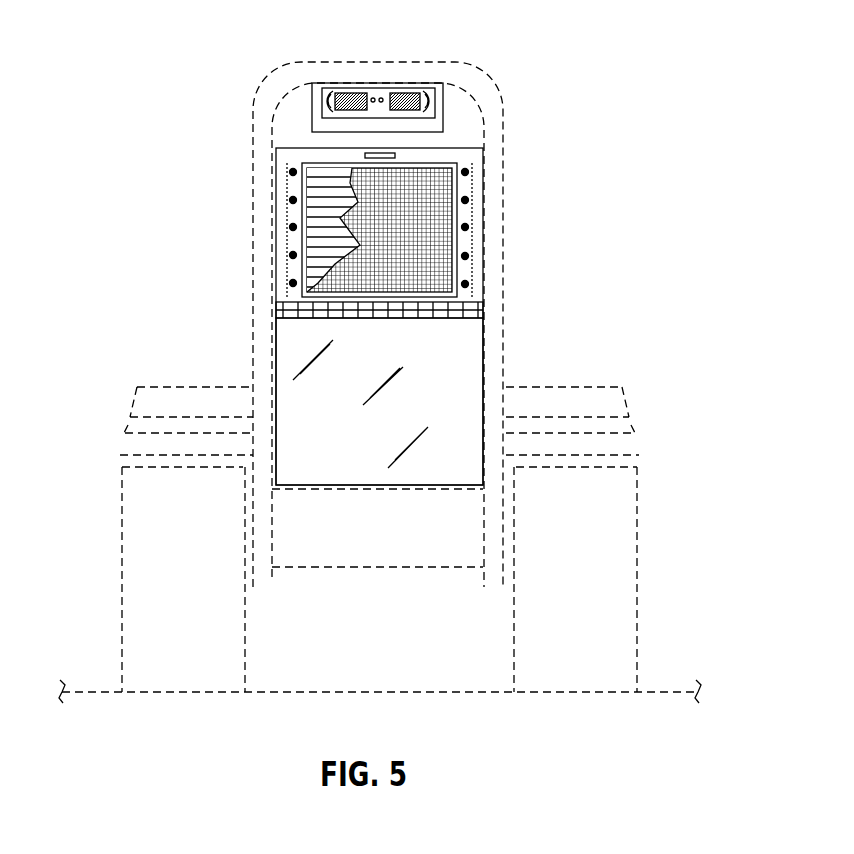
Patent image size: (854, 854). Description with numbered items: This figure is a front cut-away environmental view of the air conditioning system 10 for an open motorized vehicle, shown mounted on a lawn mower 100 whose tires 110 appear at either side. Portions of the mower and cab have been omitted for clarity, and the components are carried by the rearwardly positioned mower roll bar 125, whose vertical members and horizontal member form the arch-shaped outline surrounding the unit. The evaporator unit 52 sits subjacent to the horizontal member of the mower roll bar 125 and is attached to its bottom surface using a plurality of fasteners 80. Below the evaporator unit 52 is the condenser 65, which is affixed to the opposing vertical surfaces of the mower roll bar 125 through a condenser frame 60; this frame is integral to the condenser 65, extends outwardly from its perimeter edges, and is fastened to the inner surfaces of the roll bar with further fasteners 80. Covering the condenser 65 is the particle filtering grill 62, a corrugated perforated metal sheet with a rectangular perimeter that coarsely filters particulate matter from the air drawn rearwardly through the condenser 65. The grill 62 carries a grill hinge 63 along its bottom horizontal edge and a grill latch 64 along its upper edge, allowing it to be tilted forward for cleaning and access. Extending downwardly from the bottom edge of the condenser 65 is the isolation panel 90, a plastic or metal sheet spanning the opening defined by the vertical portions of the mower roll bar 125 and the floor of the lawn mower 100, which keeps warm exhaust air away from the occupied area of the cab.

The air conditioning system 10 is at (648, 58).
The evaporator unit 52 is at (378, 90).
The grill latch 64 is at (387, 152).
The mower roll bar 125 is at (475, 80).
The particle filtering grill 62 is at (372, 185).
The condenser frame 60 is at (290, 198).
The condenser 65 is at (312, 204).
The fasteners 80 is at (290, 283).
The grill hinge 63 is at (478, 305).
The isolation panel 90 is at (460, 392).
The lawn mower 100 is at (125, 418).
The tires 110 is at (122, 552).